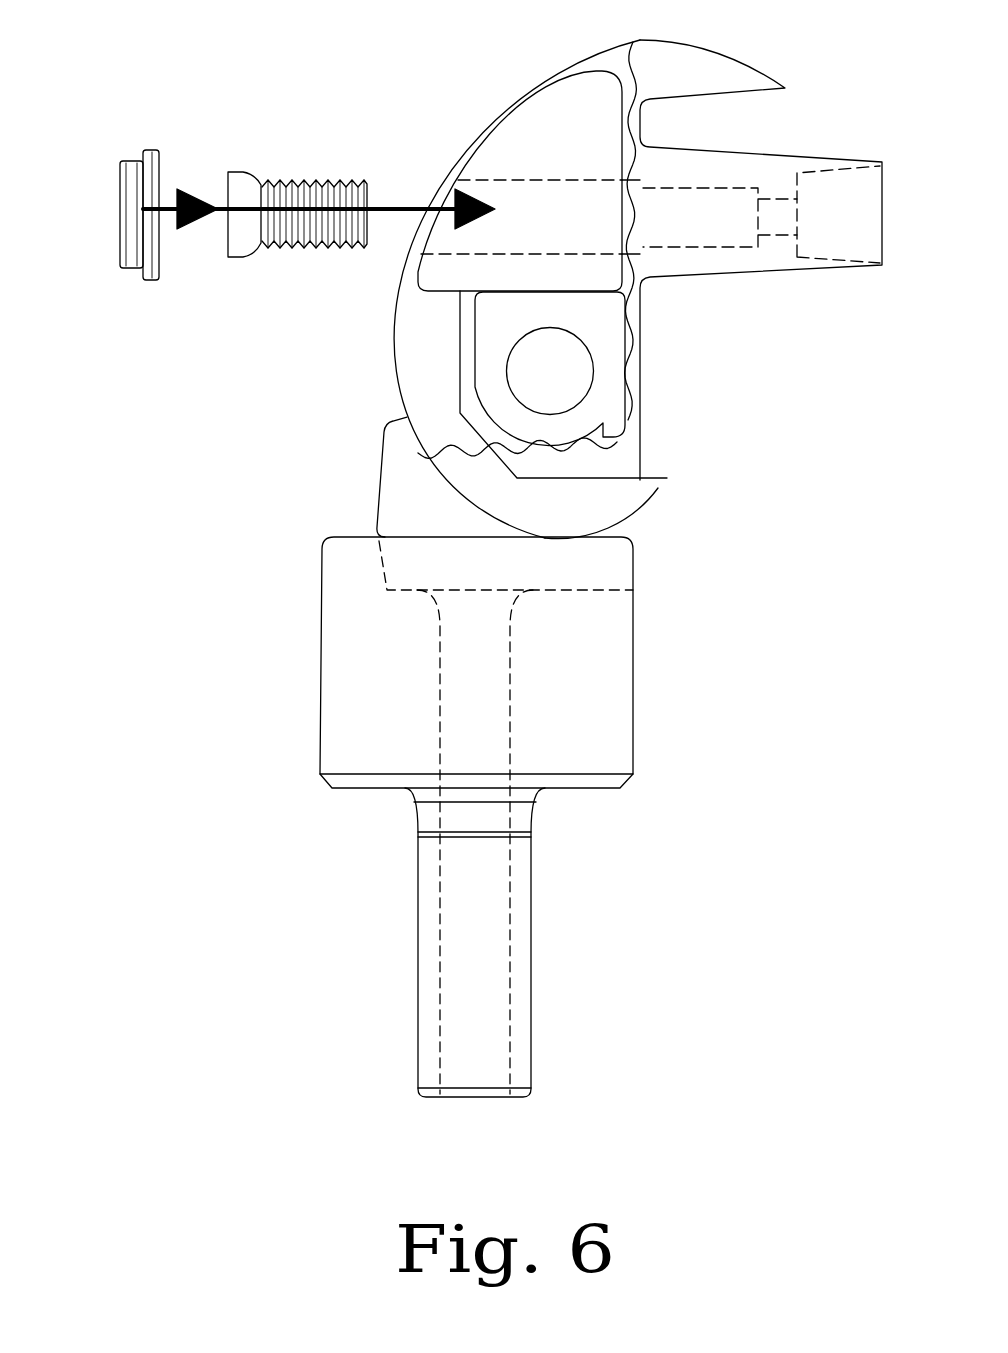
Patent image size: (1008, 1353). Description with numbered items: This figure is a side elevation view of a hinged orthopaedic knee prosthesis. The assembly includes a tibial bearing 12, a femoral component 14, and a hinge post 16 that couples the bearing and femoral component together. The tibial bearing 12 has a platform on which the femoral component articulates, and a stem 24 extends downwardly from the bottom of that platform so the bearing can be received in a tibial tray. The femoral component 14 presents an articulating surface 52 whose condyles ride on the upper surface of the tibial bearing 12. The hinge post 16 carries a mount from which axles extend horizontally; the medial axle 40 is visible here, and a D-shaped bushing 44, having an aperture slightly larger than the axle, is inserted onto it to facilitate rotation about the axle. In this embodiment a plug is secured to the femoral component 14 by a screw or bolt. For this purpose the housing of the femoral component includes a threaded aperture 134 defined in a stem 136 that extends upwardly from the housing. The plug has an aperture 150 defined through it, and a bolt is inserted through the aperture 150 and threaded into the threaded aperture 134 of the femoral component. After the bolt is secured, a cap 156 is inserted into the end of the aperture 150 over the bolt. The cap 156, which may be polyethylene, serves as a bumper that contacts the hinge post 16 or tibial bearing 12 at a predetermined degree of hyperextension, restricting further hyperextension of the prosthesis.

The tibial bearing 12 is at (615, 745).
The femoral component 14 is at (663, 65).
The hinge post 16 is at (384, 500).
The stem 24 is at (520, 961).
The medial axle 40 is at (573, 378).
The bushing 44 is at (610, 335).
The articulating surface 52 is at (553, 72).
The threaded aperture 134 is at (700, 237).
The stem 136 is at (817, 165).
The aperture 150 is at (537, 177).
The cap 156 is at (120, 247).